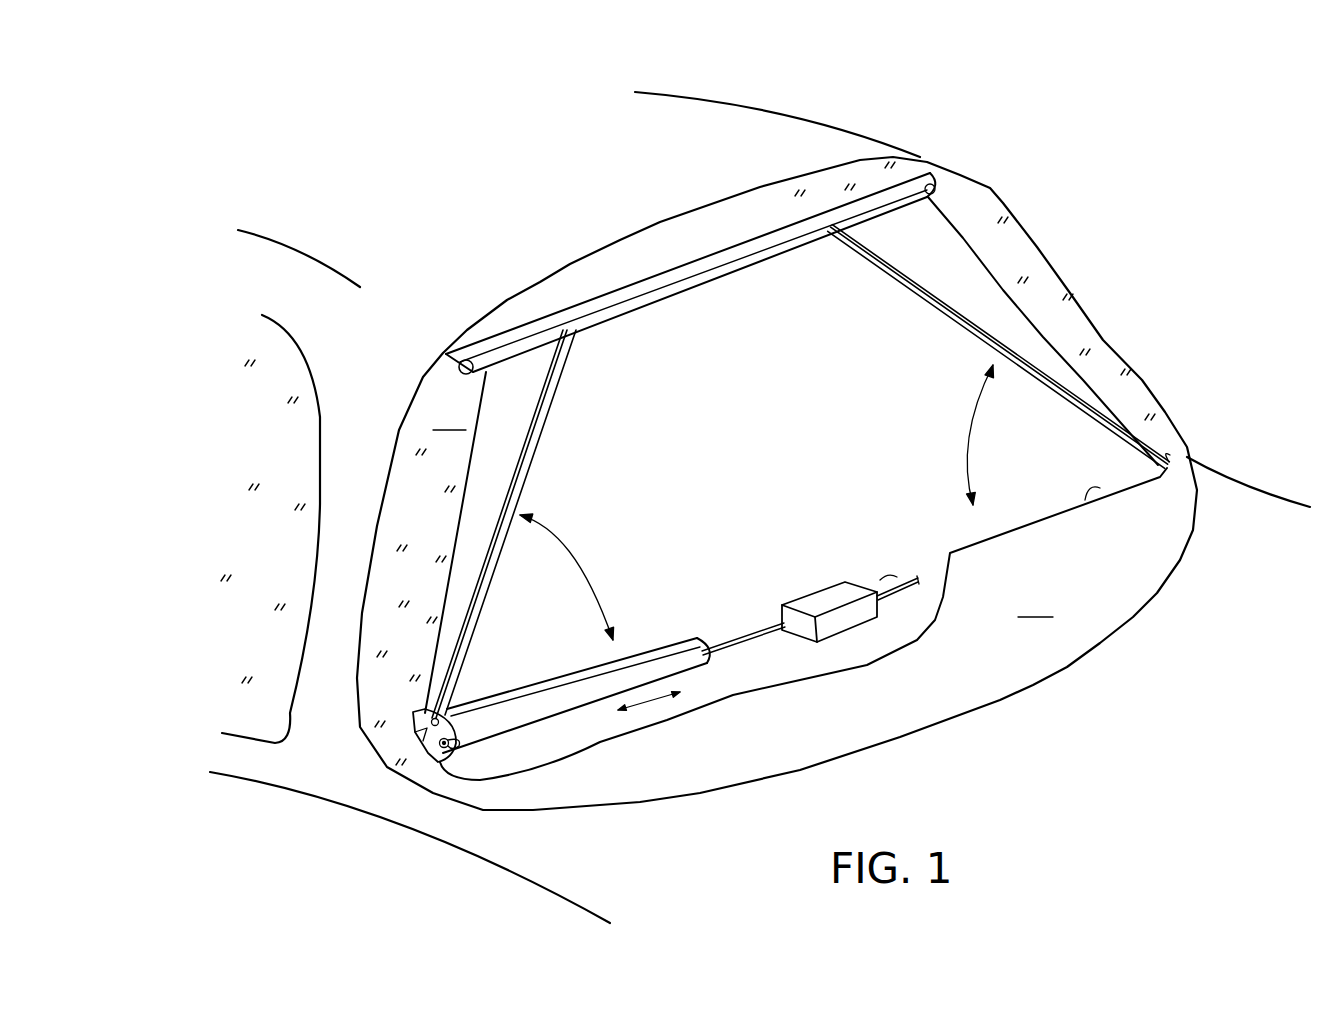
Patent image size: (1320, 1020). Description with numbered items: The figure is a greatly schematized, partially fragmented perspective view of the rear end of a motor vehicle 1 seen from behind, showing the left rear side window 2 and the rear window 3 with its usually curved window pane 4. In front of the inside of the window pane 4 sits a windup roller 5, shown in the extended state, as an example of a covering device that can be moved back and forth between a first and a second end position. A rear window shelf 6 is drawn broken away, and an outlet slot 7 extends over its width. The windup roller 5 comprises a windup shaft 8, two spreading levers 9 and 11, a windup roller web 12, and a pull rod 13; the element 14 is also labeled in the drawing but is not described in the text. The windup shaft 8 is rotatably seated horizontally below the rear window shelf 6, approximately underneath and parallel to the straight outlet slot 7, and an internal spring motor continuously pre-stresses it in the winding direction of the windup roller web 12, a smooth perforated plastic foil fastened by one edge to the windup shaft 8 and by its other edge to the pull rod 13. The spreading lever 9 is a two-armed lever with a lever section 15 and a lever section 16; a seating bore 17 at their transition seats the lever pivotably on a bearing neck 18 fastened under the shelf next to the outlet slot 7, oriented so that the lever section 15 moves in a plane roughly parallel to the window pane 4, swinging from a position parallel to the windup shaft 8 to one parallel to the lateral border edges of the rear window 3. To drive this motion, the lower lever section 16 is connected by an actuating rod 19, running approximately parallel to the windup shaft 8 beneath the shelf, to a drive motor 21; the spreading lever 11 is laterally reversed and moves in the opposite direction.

The motor vehicle 1 is at (1068, 118).
The left rear side window 2 is at (268, 657).
The rear window 3 is at (449, 415).
The window pane 4 is at (388, 593).
The windup roller 5 is at (717, 217).
The rear window shelf 6 is at (1035, 601).
The outlet slot 7 is at (1100, 488).
The windup shaft 8 is at (696, 661).
The spreading lever 9 is at (541, 469).
The spreading lever 11 is at (908, 300).
The windup roller web 12 is at (967, 233).
The pull rod 13 is at (910, 187).
The winding shaft 14 is at (710, 285).
The lever section 15 is at (562, 393).
The lever section 16 is at (433, 742).
The seating bore 17 is at (441, 712).
The bearing neck 18 is at (455, 724).
The actuating rod 19 is at (730, 637).
The drive motor 21 is at (828, 595).